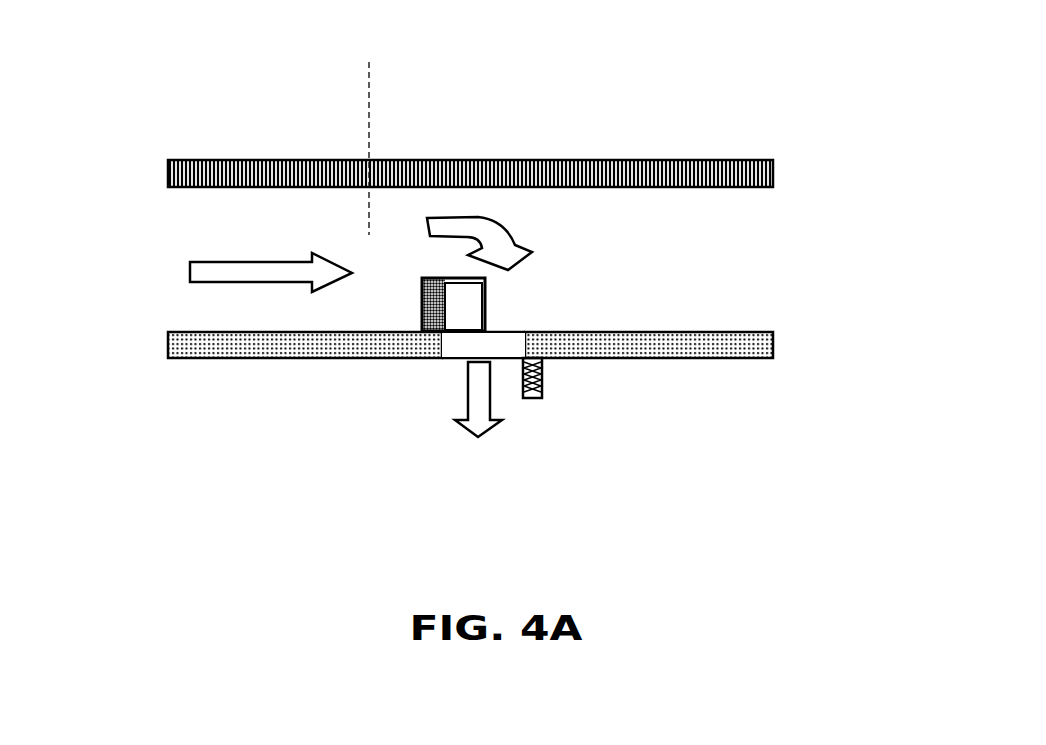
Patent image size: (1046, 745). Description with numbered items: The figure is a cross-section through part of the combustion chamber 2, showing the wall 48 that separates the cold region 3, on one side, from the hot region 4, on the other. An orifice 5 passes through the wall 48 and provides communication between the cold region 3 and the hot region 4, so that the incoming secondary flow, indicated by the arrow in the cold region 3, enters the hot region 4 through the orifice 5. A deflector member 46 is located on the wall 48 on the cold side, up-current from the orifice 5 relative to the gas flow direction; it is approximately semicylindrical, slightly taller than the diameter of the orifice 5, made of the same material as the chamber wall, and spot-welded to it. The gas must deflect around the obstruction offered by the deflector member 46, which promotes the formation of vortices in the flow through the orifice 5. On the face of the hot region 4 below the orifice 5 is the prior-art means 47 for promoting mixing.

The combustion chamber 2 is at (688, 158).
The cold region 3 is at (370, 123).
The hot region 4 is at (618, 458).
The orifice 5 is at (467, 347).
The deflector member 46 is at (447, 282).
The mixing promoting means 47 is at (542, 381).
The wall 48 is at (687, 340).